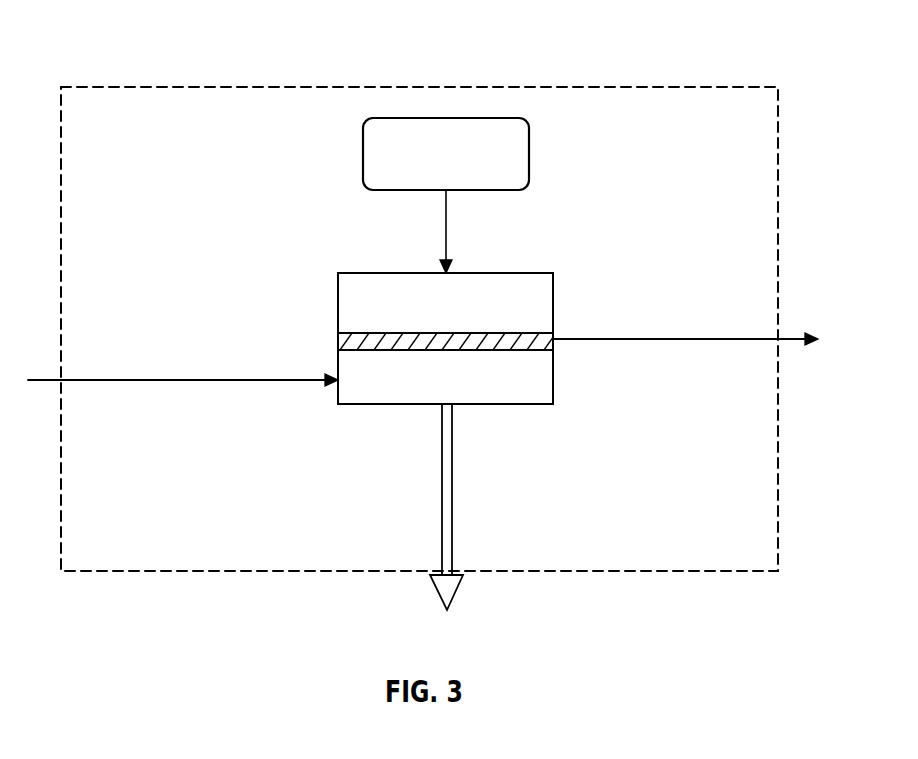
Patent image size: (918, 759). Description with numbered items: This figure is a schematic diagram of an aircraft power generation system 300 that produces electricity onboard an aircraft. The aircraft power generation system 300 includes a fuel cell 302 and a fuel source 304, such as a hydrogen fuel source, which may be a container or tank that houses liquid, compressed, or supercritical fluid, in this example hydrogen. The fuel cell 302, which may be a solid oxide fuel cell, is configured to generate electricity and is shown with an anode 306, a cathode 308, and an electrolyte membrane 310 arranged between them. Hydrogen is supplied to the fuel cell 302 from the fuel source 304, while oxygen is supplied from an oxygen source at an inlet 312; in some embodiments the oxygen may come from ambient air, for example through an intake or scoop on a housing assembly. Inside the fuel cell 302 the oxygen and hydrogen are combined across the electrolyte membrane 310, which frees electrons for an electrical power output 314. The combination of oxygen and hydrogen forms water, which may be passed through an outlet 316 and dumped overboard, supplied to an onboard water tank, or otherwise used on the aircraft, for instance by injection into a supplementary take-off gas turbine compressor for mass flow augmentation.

The aircraft power generation system 300 is at (755, 35).
The fuel cell 302 is at (538, 405).
The fuel source 304 is at (401, 192).
The anode 306 is at (530, 301).
The cathode 308 is at (386, 396).
The electrolyte membrane 310 is at (343, 340).
The inlet 312 is at (40, 383).
The electrical power output 314 is at (450, 589).
The outlet 316 is at (790, 343).